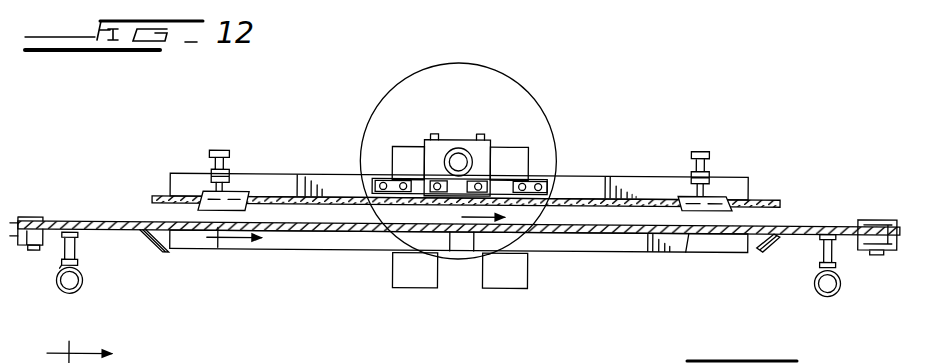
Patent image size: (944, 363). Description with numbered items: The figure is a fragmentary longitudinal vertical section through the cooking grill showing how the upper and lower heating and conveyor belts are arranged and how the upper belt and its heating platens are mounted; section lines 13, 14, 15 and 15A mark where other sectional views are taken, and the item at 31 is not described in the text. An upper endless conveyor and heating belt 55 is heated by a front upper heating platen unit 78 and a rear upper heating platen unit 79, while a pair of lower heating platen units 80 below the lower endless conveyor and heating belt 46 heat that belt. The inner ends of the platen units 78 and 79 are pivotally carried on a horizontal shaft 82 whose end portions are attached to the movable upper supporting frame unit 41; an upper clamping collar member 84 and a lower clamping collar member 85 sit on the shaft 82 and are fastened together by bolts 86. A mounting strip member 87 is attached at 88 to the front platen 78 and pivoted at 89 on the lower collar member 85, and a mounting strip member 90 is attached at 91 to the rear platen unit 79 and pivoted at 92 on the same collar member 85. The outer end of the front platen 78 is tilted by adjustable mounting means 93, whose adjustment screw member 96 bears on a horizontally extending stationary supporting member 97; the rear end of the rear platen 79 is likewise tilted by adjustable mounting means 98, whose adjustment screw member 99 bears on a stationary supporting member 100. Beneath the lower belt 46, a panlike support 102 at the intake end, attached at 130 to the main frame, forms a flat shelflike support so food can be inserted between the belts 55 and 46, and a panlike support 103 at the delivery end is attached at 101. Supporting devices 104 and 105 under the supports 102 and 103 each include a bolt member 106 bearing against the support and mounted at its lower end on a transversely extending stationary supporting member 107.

The section line 13 is at (104, 200).
The section line 14 is at (259, 119).
The section line 15 is at (498, 98).
The section line 15A is at (458, 112).
The end bracket 31 is at (21, 242).
The movable upper supporting frame unit 41 is at (577, 194).
The lower endless conveyor and heating belt 46 is at (694, 251).
The upper endless conveyor and heating belt 55 is at (626, 197).
The front upper heating platen unit 78 is at (342, 173).
The rear upper heating platen unit 79 is at (659, 195).
The lower heating platen unit 80 is at (338, 252).
The horizontal shaft 82 is at (444, 157).
The upper clamping collar member 84 is at (444, 147).
The lower clamping collar member 85 is at (487, 166).
The bolt 86 is at (480, 176).
The mounting strip member 87 is at (396, 178).
The attachment of mounting strip member 88 is at (380, 186).
The pivotal mounting of mounting strip member 89 is at (437, 193).
The mounting strip member 90 is at (530, 182).
The attachment of mounting strip member 91 is at (538, 193).
The pivotal mounting of mounting strip member 92 is at (494, 181).
The adjustable mounting means 93 is at (238, 166).
The adjustment screw member 96 is at (211, 155).
The stationary supporting member 97 is at (248, 205).
The adjustable mounting means 98 is at (708, 152).
The adjustment screw member 99 is at (711, 165).
The stationary supporting member 100 is at (738, 200).
The attachment of panlike support 101 is at (242, 251).
The panlike support 102 is at (166, 254).
The panlike support 103 is at (803, 251).
The supporting device 104 is at (60, 293).
The supporting device 105 is at (839, 253).
The bolt member 106 is at (80, 250).
The stationary supporting member 107 is at (83, 290).
The attachment of panlike support 130 is at (27, 220).